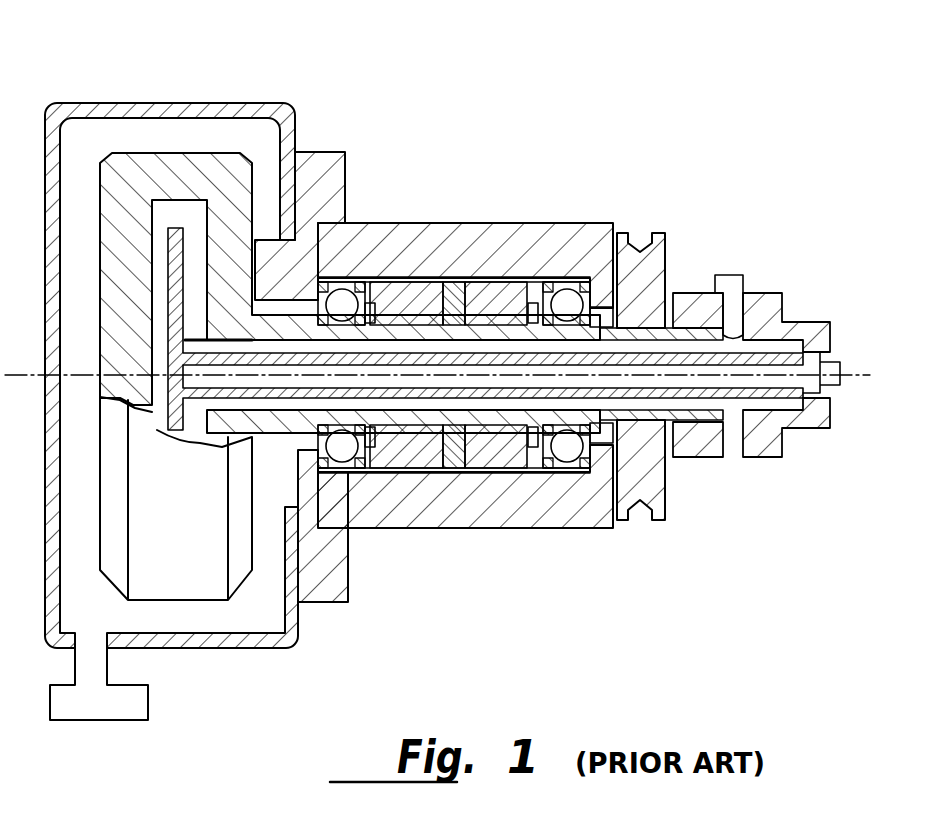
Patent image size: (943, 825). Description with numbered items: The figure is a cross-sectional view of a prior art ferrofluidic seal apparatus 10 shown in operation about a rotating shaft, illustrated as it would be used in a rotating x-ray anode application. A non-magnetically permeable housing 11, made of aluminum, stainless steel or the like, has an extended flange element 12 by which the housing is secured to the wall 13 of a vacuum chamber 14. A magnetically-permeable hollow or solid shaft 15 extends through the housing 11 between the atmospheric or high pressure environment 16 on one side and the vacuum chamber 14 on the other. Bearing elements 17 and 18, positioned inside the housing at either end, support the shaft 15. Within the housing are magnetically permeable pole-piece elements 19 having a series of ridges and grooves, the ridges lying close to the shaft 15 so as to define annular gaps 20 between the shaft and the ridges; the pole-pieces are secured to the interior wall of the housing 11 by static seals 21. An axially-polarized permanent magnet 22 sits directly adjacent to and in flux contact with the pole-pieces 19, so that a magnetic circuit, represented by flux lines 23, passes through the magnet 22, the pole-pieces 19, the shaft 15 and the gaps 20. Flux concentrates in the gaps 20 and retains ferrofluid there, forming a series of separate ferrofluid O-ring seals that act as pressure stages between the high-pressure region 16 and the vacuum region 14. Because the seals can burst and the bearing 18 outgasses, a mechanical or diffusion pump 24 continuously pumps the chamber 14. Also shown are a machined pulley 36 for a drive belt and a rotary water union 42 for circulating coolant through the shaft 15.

The ferrofluidic seal apparatus 10 is at (130, 96).
The housing 11 is at (570, 237).
The flange element 12 is at (323, 150).
The wall 13 is at (190, 112).
The vacuum chamber 14 is at (250, 128).
The shaft 15 is at (650, 333).
The atmospheric or high pressure environment 16 is at (826, 245).
The bearing element 17 is at (566, 375).
The bearing element 18 is at (341, 375).
The pole-piece elements 19 is at (485, 288).
The annular gaps 20 is at (537, 277).
The static seals 21 is at (507, 280).
The permanent magnet 22 is at (452, 280).
The flux lines 23 is at (473, 302).
The pump 24 is at (99, 684).
The pulley 36 is at (657, 236).
The rotary water union 42 is at (767, 293).